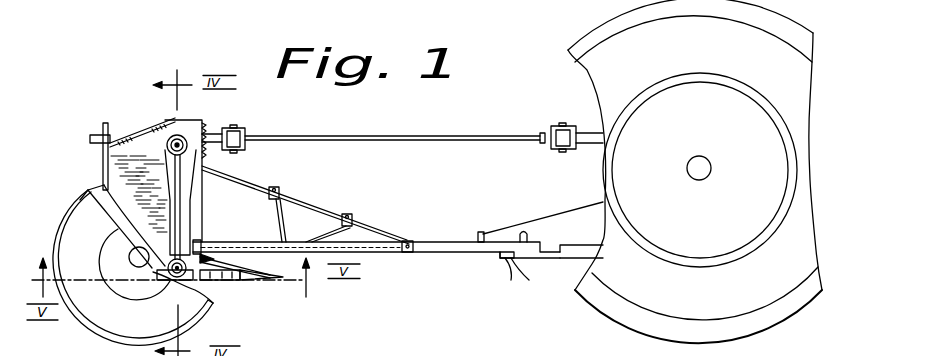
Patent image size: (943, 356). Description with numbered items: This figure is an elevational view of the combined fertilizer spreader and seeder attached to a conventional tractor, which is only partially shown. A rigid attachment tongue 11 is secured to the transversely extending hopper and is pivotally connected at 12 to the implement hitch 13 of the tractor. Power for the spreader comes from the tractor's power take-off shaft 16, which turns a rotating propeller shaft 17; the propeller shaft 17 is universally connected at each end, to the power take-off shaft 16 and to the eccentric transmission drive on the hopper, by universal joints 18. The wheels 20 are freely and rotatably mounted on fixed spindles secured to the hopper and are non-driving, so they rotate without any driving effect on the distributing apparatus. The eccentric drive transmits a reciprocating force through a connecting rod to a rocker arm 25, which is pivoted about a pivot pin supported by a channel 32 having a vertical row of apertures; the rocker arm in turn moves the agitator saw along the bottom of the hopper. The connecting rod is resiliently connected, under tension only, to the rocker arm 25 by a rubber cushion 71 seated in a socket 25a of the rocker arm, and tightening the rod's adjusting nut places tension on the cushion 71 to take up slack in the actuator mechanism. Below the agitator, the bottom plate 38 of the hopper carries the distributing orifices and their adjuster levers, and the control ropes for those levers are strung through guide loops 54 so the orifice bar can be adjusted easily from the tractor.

The attachment tongue 11 is at (472, 241).
The pivotal connection 12 is at (507, 257).
The implement hitch 13 is at (581, 252).
The power take-off shaft 16 is at (589, 146).
The propeller shaft 17 is at (388, 134).
The universal joints 18 is at (236, 126).
The wheels 20 is at (214, 308).
The rocker arm 25 is at (183, 225).
The socket 25a is at (172, 133).
The channel 32 is at (163, 197).
The bottom plate 38 is at (152, 272).
The guide loops 54 is at (487, 232).
The rubber cushion 71 is at (175, 144).